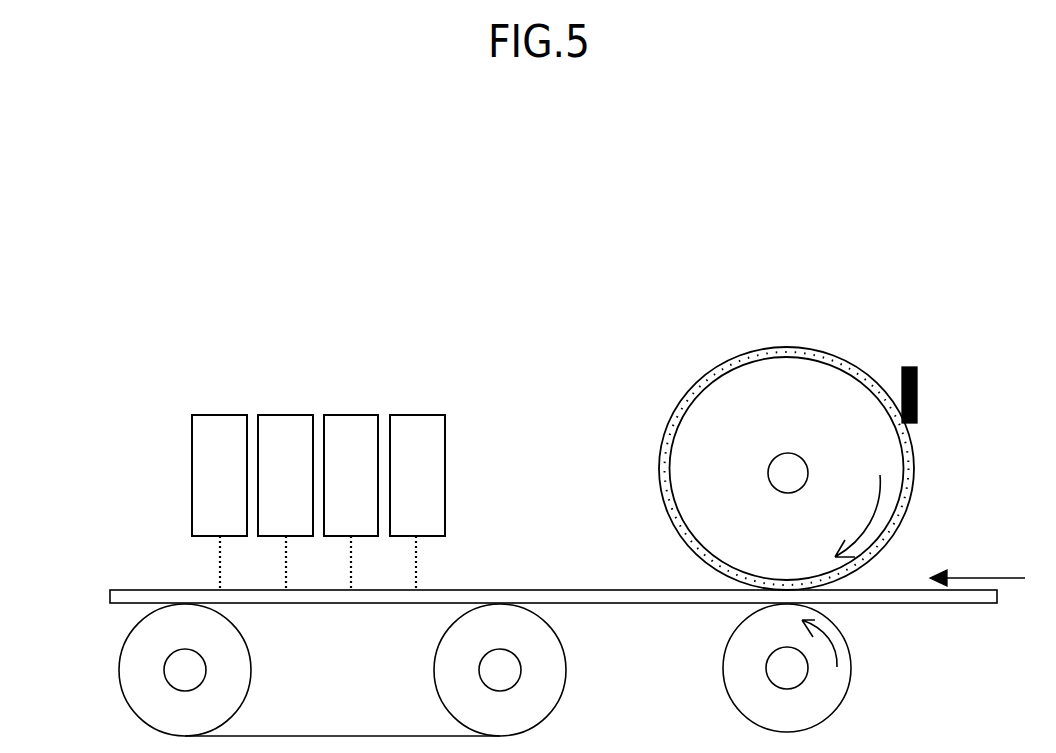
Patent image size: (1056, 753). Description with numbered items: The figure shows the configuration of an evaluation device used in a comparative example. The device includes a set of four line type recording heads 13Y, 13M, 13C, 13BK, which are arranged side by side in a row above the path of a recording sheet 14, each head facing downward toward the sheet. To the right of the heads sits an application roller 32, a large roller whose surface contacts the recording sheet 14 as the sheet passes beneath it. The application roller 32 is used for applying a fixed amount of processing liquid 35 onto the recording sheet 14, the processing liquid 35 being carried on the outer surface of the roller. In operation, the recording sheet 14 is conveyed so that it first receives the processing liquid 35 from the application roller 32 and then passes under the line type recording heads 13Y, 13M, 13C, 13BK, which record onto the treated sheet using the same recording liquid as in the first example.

The line type recording head 13Y is at (230, 437).
The line type recording head 13M is at (295, 437).
The line type recording head 13C is at (347, 437).
The line type recording head 13BK is at (417, 442).
The recording sheet 14 is at (110, 590).
The application roller 32 is at (718, 417).
The processing liquid 35 is at (915, 477).